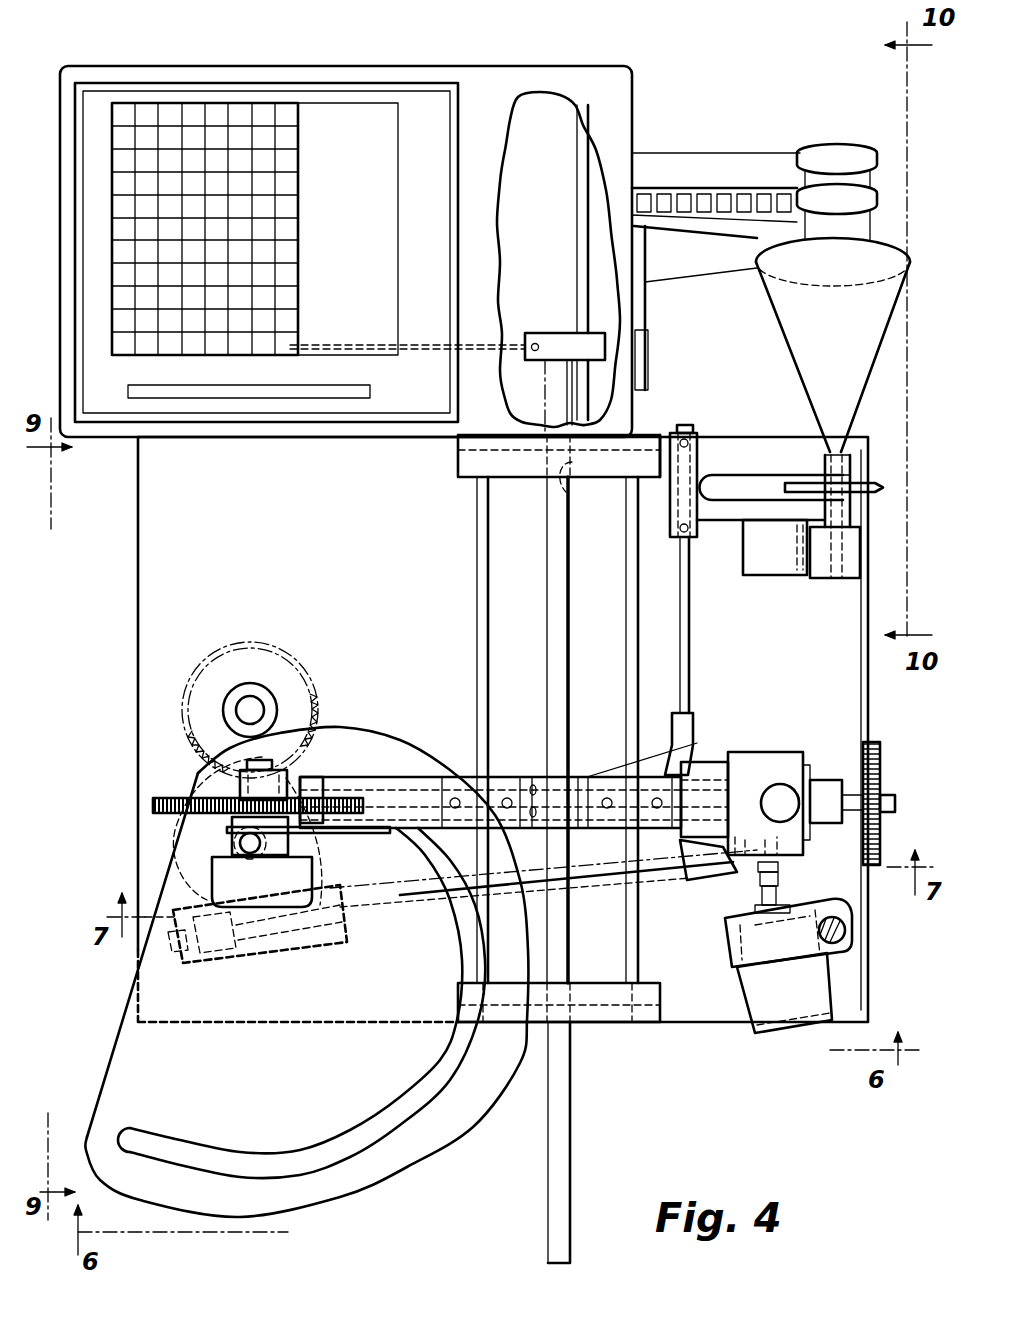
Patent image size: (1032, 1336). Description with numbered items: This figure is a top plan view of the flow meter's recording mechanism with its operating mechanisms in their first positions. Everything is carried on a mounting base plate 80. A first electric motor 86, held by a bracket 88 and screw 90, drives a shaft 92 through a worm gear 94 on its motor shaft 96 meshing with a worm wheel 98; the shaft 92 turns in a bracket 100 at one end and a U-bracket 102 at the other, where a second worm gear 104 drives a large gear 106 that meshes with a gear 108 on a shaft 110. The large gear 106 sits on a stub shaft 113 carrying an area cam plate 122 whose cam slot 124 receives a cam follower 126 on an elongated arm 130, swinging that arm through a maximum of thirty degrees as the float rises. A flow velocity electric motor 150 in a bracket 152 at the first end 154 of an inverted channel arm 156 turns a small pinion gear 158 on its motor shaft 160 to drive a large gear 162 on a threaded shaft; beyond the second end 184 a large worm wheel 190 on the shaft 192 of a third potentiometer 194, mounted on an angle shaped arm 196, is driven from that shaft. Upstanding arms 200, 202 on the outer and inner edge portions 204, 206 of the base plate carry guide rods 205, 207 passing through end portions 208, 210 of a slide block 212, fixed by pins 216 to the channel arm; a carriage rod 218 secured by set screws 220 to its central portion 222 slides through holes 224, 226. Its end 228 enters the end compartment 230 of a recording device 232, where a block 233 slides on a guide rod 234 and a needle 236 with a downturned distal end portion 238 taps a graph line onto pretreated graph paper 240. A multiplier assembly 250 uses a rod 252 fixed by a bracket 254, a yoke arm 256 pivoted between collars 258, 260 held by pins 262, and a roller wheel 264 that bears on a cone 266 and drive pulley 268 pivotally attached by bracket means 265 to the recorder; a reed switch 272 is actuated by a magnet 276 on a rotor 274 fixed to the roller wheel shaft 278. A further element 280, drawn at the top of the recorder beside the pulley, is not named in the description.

The mounting base plate 80 is at (408, 600).
The first electric motor 86 is at (799, 1007).
The bracket 88 is at (783, 950).
The screw 90 is at (830, 945).
The shaft 92 is at (607, 874).
The worm gear 94 is at (779, 875).
The motor shaft 96 is at (783, 892).
The worm wheel 98 is at (777, 848).
The bracket 100 is at (732, 878).
The U-bracket 102 is at (343, 940).
The second worm gear 104 is at (232, 952).
The large gear 106 is at (312, 861).
The gear 108 is at (313, 709).
The shaft 110 is at (251, 704).
The stub shaft 113 is at (238, 845).
The area cam plate 122 is at (300, 1090).
The cam slot 124 is at (404, 1089).
The cam follower 126 is at (296, 775).
The elongated arm 130 is at (433, 777).
The flow velocity electric motor 150 is at (707, 764).
The bracket 152 is at (787, 752).
The first end 154 is at (822, 779).
The inverted channel arm 156 is at (418, 778).
The small pinion gear 158 is at (885, 796).
The motor shaft 160 is at (848, 812).
The large gear 162 is at (877, 749).
The second end 184 is at (328, 787).
The large worm wheel 190 is at (163, 797).
The shaft 192 is at (255, 760).
The third potentiometer 194 is at (275, 895).
The angle shaped arm 196 is at (376, 838).
The upstanding arm 200 is at (662, 997).
The upstanding arm 202 is at (472, 463).
The outer edge portion 204 is at (672, 1022).
The guide rod 205 is at (480, 670).
The inner edge portion 206 is at (649, 437).
The guide rod 207 is at (626, 661).
The end portion 208 is at (462, 780).
The end portion 210 is at (617, 821).
The slide block 212 is at (517, 777).
The pins 216 is at (657, 808).
The carriage rod 218 is at (568, 634).
The set screws 220 is at (540, 829).
The central portion 222 is at (565, 790).
The hole 224 is at (570, 980).
The hole 226 is at (572, 496).
The end of carriage rod 228 is at (550, 395).
The end compartment 230 is at (560, 220).
The recording device 232 is at (510, 62).
The block 233 is at (553, 342).
The guide rod 234 is at (577, 271).
The needle 236 is at (525, 347).
The distal end portion 238 is at (283, 347).
The graph paper 240 is at (283, 296).
The multiplier assembly 250 is at (882, 368).
The rod 252 is at (686, 632).
The bracket 254 is at (688, 730).
The yoke arm 256 is at (737, 460).
The collar 258 is at (698, 437).
The collar 260 is at (693, 530).
The pins 262 is at (678, 545).
The roller wheel 264 is at (880, 492).
The bracket means 265 is at (700, 264).
The cone 266 is at (850, 342).
The drive pulley 268 is at (873, 207).
The reed switch 272 is at (773, 566).
The rotor 274 is at (836, 579).
The magnet 276 is at (860, 555).
The roller wheel shaft 278 is at (853, 533).
The chain 280 is at (768, 198).